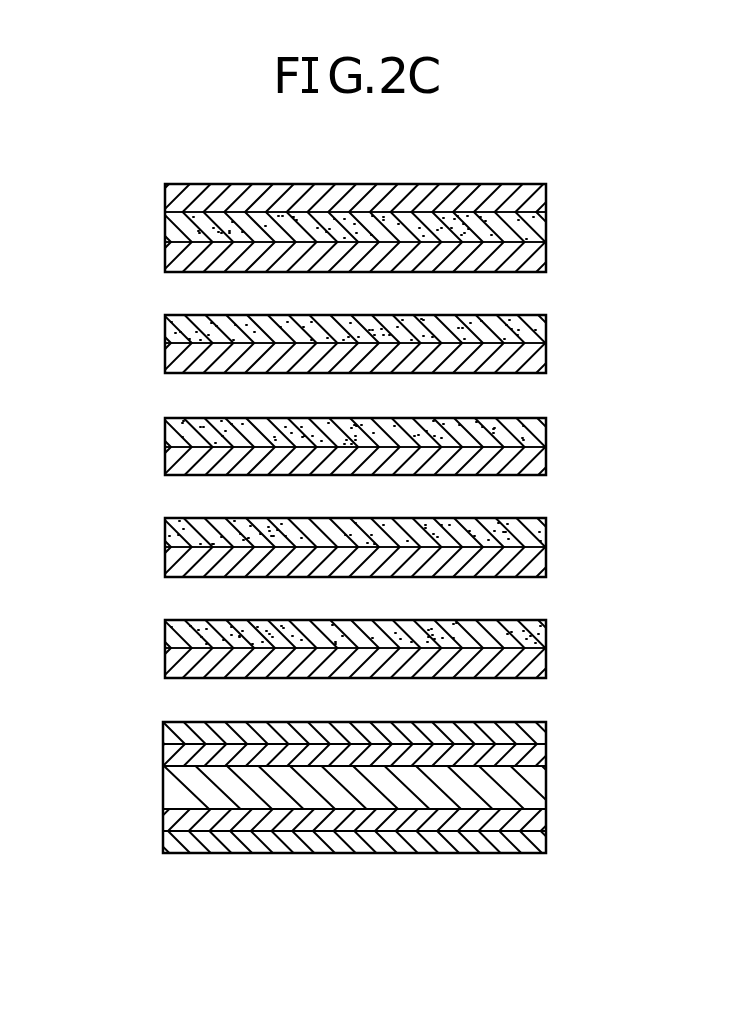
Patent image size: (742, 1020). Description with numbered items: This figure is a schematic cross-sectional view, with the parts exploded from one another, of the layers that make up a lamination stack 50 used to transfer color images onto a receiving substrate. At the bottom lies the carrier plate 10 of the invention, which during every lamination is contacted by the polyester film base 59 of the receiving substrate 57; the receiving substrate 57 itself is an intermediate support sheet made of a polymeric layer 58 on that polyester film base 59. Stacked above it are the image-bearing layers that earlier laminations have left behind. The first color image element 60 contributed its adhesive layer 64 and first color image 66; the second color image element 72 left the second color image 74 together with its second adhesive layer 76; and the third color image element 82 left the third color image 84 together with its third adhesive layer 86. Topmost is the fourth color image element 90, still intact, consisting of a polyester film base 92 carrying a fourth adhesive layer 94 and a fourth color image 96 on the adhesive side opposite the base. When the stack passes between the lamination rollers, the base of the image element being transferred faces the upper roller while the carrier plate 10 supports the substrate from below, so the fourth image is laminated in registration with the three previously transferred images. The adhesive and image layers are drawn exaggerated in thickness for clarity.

The lamination stack 50 is at (590, 152).
The fourth color image element 90 is at (492, 167).
The polyester film base 92 is at (165, 198).
The fourth adhesive layer 94 is at (165, 227).
The fourth color image 96 is at (165, 257).
The third color image element 82 is at (516, 301).
The third adhesive layer 86 is at (165, 329).
The third color image 84 is at (165, 358).
The second color image element 72 is at (515, 402).
The second adhesive layer 76 is at (165, 433).
The second color image 74 is at (165, 462).
The first color image element 60 is at (515, 510).
The adhesive layer 64 is at (165, 533).
The first color image 66 is at (165, 562).
The receiving substrate 57 is at (515, 612).
The polymeric layer 58 is at (165, 635).
The polyester film base 59 is at (165, 664).
The carrier plate 10 is at (163, 708).